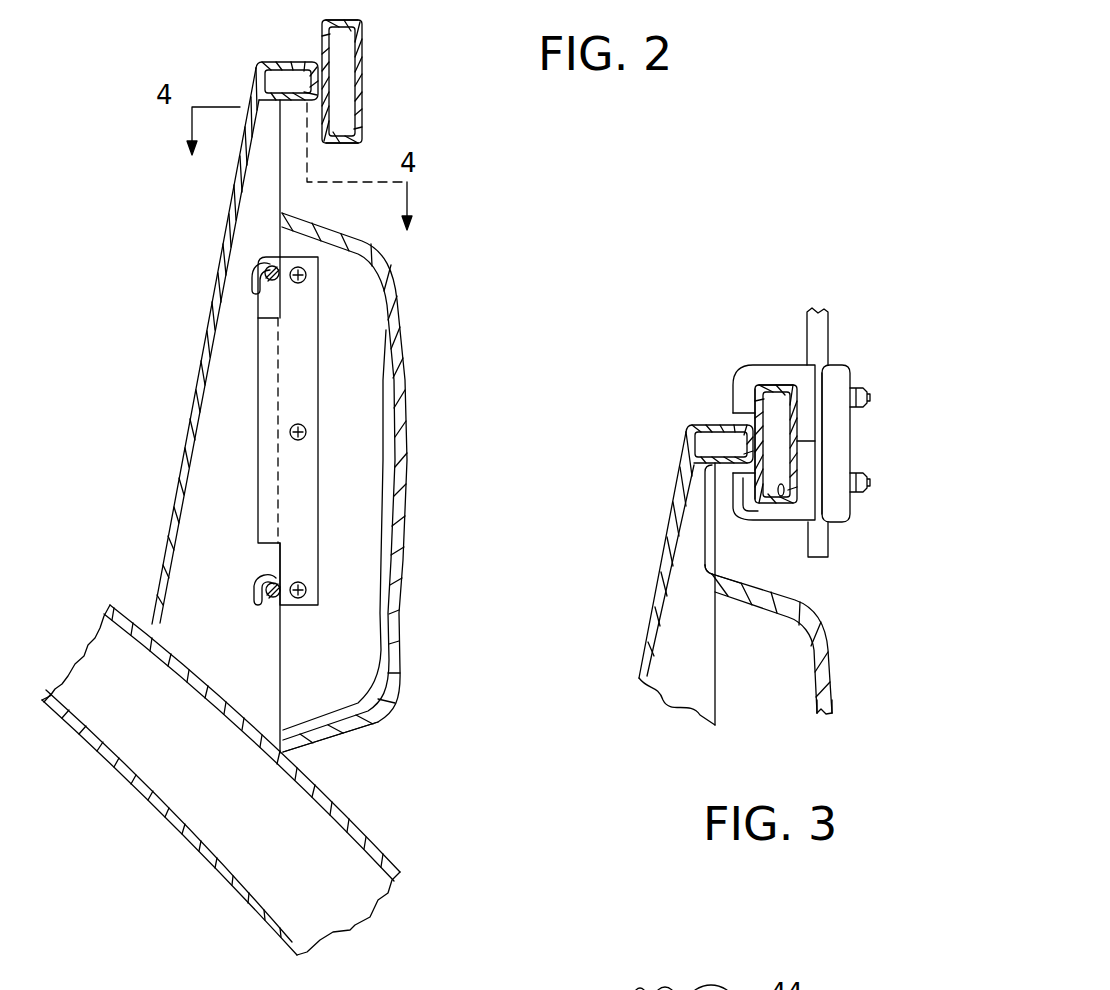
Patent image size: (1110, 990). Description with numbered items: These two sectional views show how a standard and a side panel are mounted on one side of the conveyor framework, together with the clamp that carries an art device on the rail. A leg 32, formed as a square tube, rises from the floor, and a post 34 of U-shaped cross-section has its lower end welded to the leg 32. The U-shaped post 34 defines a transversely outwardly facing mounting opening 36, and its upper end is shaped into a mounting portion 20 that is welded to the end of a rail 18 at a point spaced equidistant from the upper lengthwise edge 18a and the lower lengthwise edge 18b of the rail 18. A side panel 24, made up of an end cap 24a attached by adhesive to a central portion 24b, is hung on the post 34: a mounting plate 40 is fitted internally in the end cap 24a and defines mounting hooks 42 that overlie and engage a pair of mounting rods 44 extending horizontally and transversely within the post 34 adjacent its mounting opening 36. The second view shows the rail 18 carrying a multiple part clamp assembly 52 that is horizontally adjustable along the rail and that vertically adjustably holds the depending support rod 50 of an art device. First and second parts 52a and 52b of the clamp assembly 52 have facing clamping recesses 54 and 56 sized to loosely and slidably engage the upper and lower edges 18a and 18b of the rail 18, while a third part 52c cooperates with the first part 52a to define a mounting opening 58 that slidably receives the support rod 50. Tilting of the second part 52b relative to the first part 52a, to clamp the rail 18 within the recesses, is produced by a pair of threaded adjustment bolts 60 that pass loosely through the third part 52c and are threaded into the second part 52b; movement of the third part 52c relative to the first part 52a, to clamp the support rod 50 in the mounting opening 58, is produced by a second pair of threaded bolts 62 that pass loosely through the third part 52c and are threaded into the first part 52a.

In FIG. 2, the rail 18 is at (362, 55).
In FIG. 3, the rail 18 is at (735, 423).
In FIG. 2, the upper lengthwise extending edge 18a is at (332, 21).
In FIG. 3, the upper lengthwise extending edge 18a is at (765, 385).
In FIG. 2, the lower lengthwise extending edge 18b is at (343, 145).
In FIG. 3, the lower lengthwise extending edge 18b is at (780, 497).
In FIG. 2, the mounting portion 20 is at (268, 62).
In FIG. 3, the mounting portion 20 is at (705, 425).
In FIG. 2, the side panel 24 is at (398, 322).
In FIG. 3, the side panel 24 is at (832, 645).
In FIG. 2, the end cap 24a is at (403, 648).
In FIG. 3, the central portion 24b is at (833, 710).
In FIG. 2, the leg 32 is at (367, 837).
In FIG. 2, the post 34 is at (183, 462).
In FIG. 3, the post 34 is at (648, 612).
In FIG. 2, the mounting opening 36 is at (289, 199).
In FIG. 3, the mounting opening 36 is at (710, 594).
In FIG. 2, the mounting plate 40 is at (305, 483).
In FIG. 2, the mounting hook 42 is at (253, 283).
In FIG. 2, the mounting rod 44 is at (264, 270).
In FIG. 3, the support rod 50 is at (807, 322).
In FIG. 3, the clamp assembly 52 is at (838, 363).
In FIG. 3, the first part 52a is at (783, 364).
In FIG. 3, the second part 52b is at (775, 508).
In FIG. 3, the third part 52c is at (852, 522).
In FIG. 3, the clamping recess 54 is at (840, 530).
In FIG. 3, the clamping recess 56 is at (760, 387).
In FIG. 3, the mounting opening 58 is at (756, 604).
In FIG. 3, the threaded adjustment bolt 60 is at (865, 495).
In FIG. 3, the threaded bolt 62 is at (862, 388).